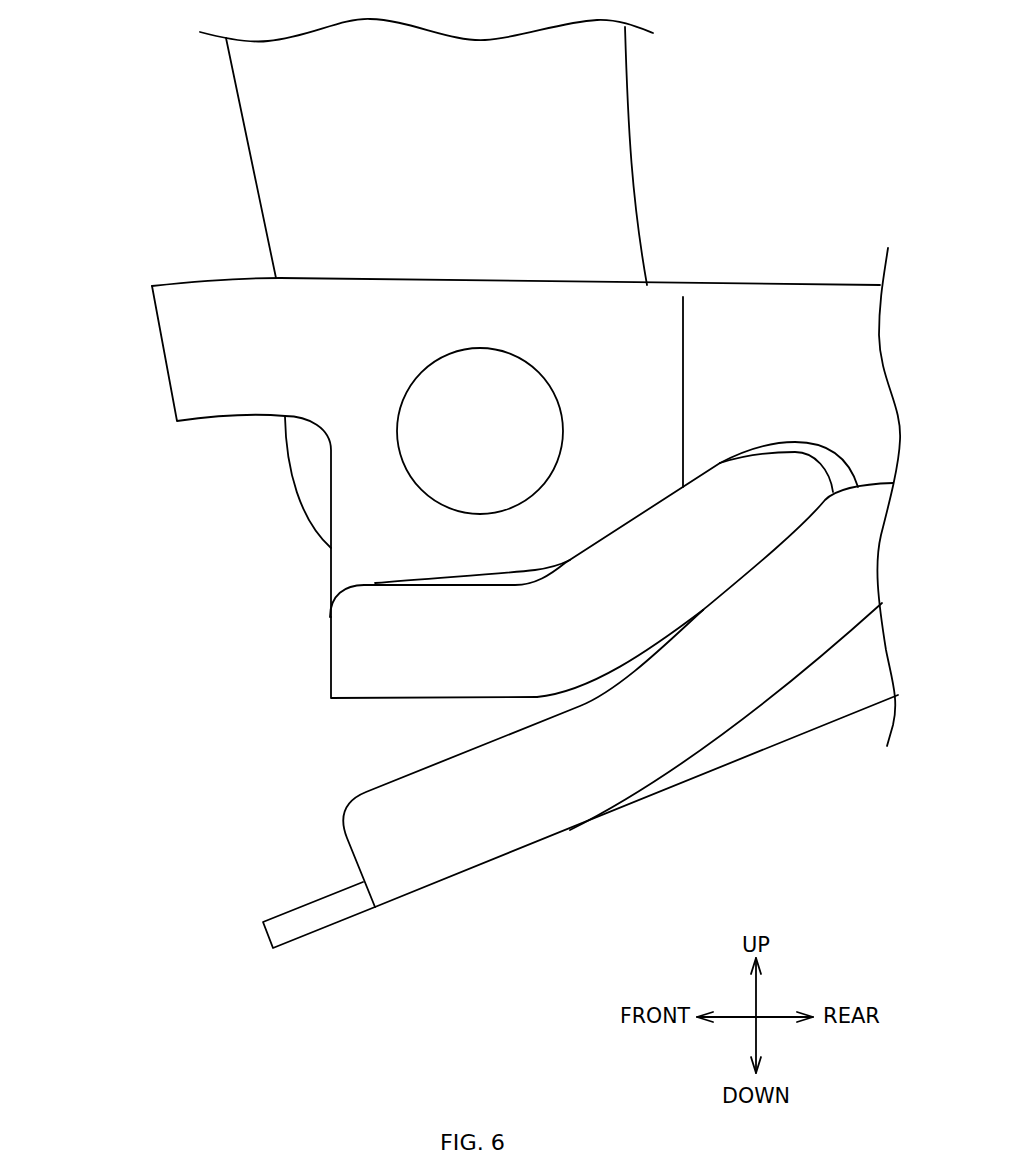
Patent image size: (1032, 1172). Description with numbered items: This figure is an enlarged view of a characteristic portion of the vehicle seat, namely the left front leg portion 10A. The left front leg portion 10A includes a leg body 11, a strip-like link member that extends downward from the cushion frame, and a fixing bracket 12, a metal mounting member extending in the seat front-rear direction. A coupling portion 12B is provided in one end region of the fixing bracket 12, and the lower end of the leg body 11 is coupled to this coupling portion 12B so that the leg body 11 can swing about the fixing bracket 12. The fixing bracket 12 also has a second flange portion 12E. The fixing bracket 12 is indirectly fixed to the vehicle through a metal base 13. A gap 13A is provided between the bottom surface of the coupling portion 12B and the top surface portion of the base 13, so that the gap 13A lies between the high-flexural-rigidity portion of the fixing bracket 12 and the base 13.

The left front leg portion 10A is at (158, 238).
The leg body 11 is at (628, 88).
The fixing bracket 12 is at (328, 649).
The coupling portion 12B is at (478, 652).
The second flange portion 12E is at (728, 545).
The base 13 is at (488, 809).
The gap 13A is at (324, 762).